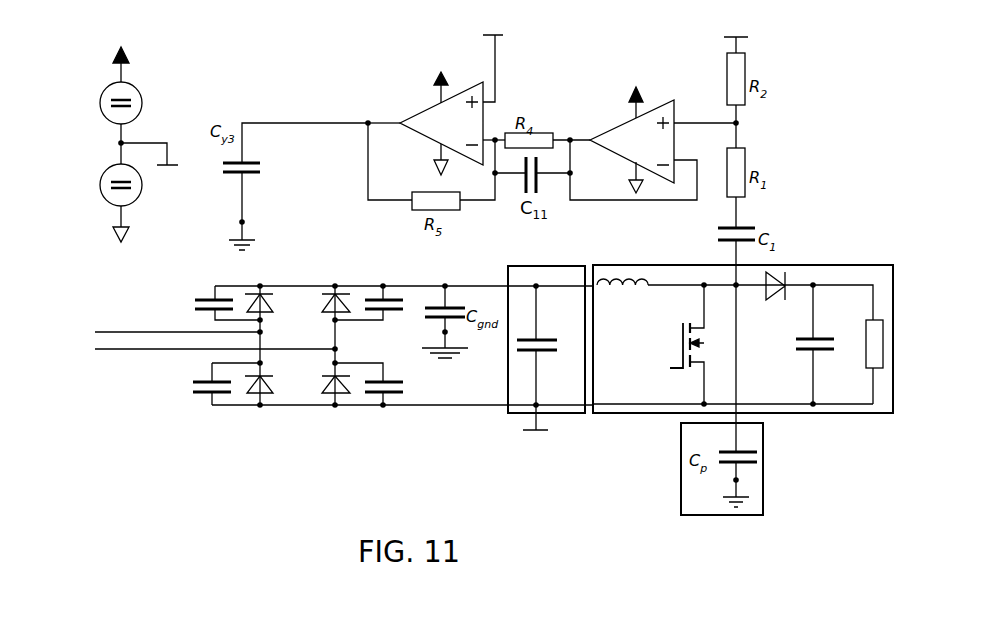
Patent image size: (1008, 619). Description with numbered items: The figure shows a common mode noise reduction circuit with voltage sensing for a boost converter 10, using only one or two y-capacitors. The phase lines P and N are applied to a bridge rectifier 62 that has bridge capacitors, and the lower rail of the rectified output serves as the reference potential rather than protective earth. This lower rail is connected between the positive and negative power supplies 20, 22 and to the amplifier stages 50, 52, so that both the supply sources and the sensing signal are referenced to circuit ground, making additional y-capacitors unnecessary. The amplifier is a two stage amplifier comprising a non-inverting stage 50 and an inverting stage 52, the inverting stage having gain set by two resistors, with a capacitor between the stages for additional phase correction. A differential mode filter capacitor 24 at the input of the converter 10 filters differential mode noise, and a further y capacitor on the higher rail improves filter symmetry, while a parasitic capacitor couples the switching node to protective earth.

The boost converter 10 is at (784, 270).
The positive power supply 20 is at (100, 95).
The negative power supply 22 is at (100, 177).
The differential mode filter capacitor 24 is at (530, 265).
The non-inverting amplifier stage 50 is at (410, 77).
The inverting amplifier stage 52 is at (604, 80).
The bridge rectifier 62 is at (321, 271).